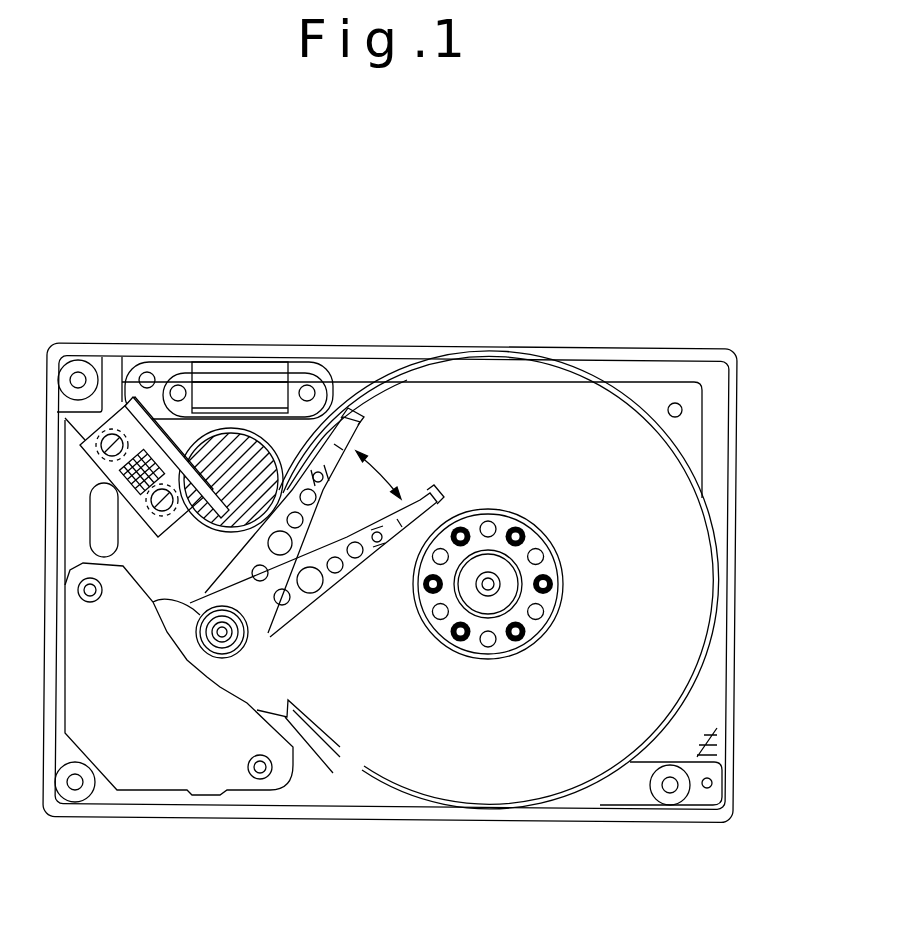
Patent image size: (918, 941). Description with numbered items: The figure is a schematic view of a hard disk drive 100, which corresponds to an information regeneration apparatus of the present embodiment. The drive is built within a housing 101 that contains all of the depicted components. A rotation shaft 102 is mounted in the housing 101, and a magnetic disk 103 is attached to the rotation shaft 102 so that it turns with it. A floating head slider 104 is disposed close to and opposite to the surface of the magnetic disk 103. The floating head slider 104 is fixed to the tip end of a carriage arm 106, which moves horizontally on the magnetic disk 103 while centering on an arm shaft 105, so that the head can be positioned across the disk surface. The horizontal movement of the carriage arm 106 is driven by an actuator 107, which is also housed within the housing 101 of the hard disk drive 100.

The hard disk drive 100 is at (553, 243).
The housing 101 is at (590, 347).
The rotation shaft 102 is at (508, 593).
The magnetic disk 103 is at (687, 540).
The floating head slider 104 is at (421, 493).
The arm shaft 105 is at (222, 645).
The carriage arm 106 is at (297, 603).
The actuator 107 is at (138, 770).